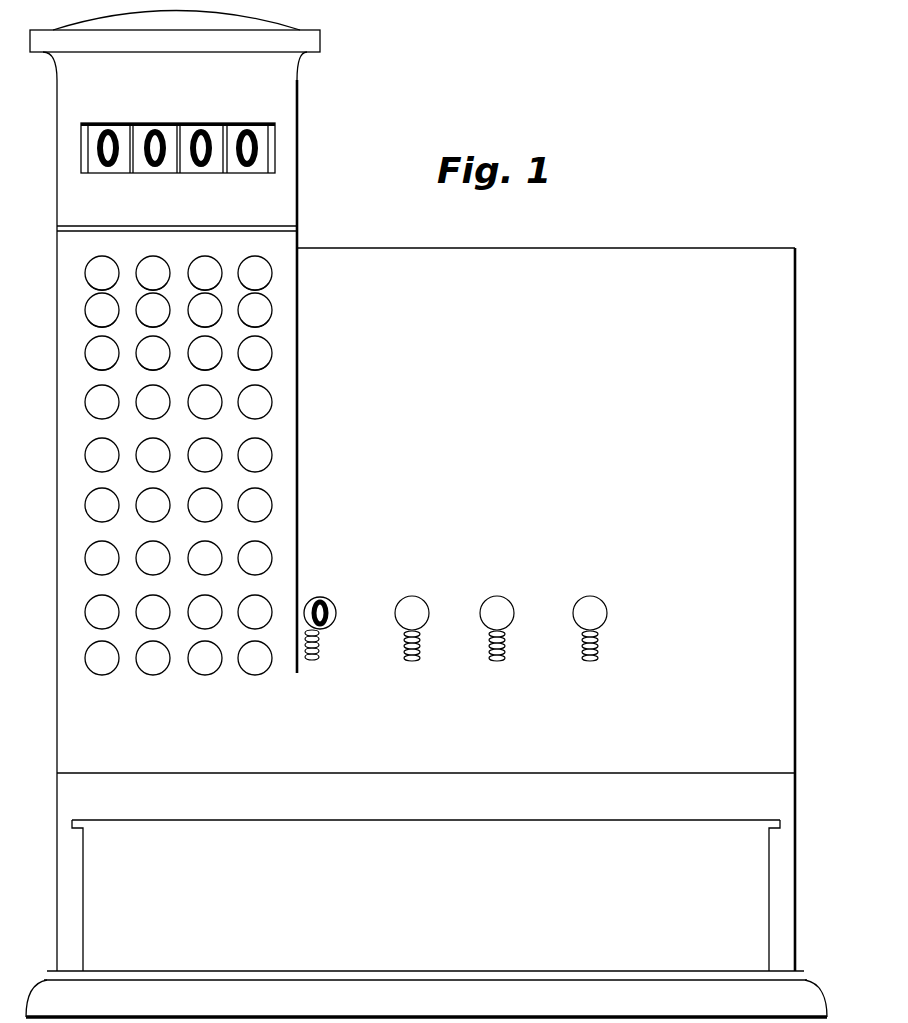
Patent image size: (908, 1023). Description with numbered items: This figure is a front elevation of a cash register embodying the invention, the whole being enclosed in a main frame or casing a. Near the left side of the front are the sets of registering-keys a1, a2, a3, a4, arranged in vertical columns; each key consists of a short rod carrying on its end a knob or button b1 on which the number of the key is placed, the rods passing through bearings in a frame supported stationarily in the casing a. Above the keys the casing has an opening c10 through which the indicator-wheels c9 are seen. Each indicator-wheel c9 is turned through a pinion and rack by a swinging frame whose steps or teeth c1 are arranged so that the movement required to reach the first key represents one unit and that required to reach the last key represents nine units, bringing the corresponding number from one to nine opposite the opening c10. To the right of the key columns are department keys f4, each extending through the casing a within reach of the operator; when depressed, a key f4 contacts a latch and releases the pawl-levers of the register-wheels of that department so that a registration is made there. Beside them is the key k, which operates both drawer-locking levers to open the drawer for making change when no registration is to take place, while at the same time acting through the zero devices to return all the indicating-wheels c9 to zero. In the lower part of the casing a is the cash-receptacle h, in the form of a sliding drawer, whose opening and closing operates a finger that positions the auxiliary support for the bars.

The casing a is at (426, 514).
The set of keys a1 is at (255, 454).
The set of keys a2 is at (205, 454).
The set of keys a3 is at (153, 454).
The set of keys a4 is at (102, 454).
The knob or button b1 is at (250, 420).
The steps or teeth c1 is at (252, 126).
The indicator-wheel c9 is at (93, 130).
The opening in the casing c10 is at (84, 173).
The key k is at (320, 597).
The department key f4 is at (416, 596).
The cash-receptacle h is at (426, 895).